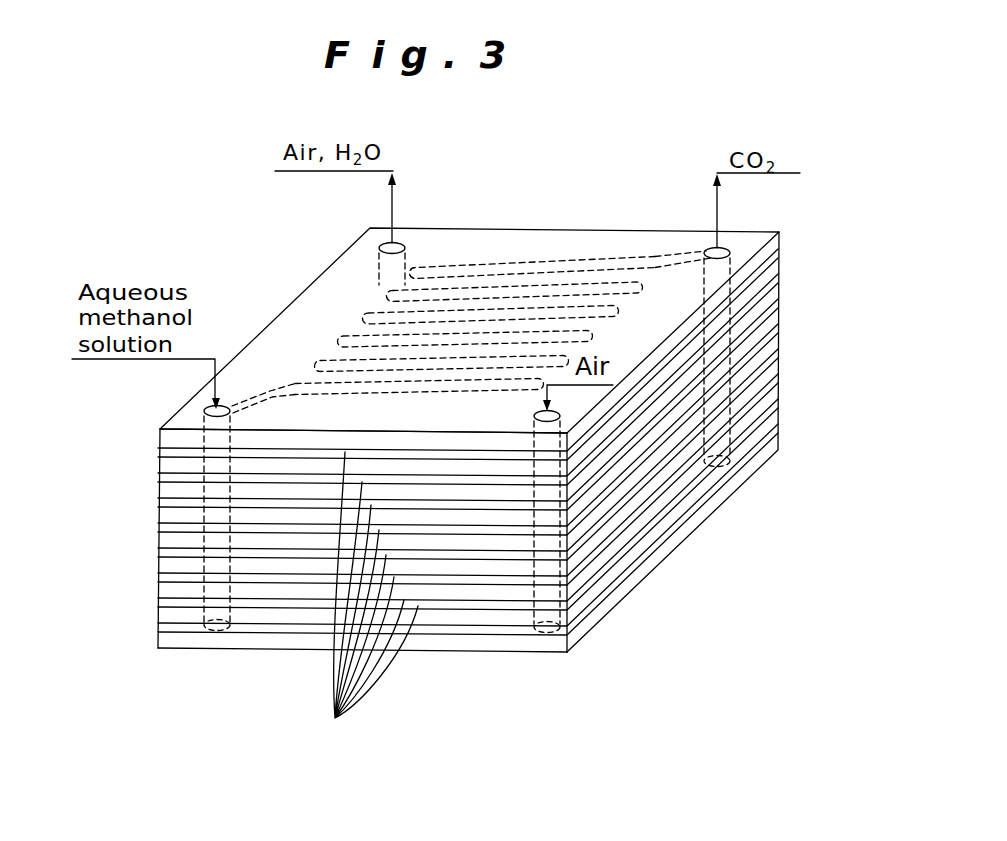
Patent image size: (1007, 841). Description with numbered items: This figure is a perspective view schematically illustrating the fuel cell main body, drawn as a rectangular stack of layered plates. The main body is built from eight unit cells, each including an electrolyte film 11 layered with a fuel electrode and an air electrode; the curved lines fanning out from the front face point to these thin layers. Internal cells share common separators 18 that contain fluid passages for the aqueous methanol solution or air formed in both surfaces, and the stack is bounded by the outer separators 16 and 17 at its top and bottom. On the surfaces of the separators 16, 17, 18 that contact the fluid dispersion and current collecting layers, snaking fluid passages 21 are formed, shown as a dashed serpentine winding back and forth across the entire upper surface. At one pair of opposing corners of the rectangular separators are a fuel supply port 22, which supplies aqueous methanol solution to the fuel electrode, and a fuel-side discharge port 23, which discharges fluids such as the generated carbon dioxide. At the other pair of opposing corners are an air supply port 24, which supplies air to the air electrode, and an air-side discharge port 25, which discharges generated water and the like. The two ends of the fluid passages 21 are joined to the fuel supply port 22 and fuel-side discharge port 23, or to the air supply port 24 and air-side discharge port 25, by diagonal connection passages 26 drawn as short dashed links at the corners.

The electrolyte film 11 is at (367, 605).
The separator 16 is at (185, 438).
The separator 17 is at (173, 638).
The common separator 18 is at (166, 612).
The fluid passage 21 is at (505, 265).
The fuel supply port 22 is at (206, 411).
The fuel-side discharge port 23 is at (724, 252).
The air supply port 24 is at (560, 418).
The air-side discharge port 25 is at (381, 246).
The diagonal connection passage 26 is at (262, 392).